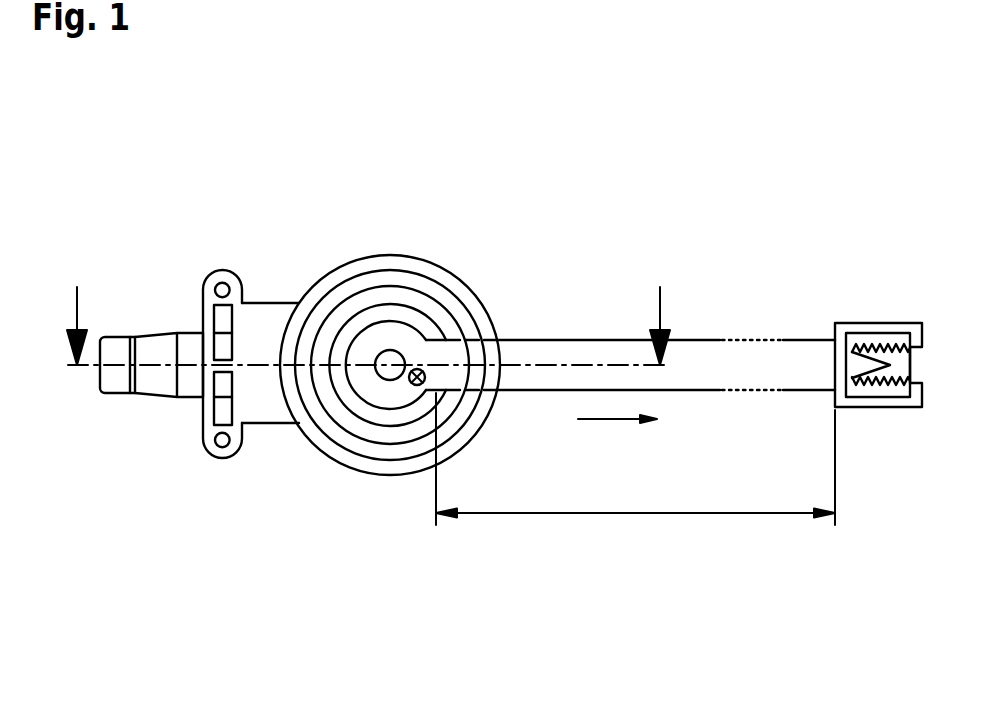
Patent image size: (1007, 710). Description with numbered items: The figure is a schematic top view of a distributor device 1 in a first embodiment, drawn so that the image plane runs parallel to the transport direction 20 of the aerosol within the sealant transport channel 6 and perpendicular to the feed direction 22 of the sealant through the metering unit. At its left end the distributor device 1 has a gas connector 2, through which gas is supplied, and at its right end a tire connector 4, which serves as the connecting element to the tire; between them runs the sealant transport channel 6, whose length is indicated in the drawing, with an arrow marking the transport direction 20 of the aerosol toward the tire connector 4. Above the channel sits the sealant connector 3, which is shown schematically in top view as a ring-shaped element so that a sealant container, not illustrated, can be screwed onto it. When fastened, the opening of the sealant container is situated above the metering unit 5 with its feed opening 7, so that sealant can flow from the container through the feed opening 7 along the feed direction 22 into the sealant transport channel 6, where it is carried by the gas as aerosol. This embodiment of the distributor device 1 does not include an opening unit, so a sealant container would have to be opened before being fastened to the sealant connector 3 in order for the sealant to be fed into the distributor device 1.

The distributor device 1 is at (146, 152).
The gas connector 2 is at (145, 347).
The sealant connector 3 is at (450, 283).
The tire connector 4 is at (887, 322).
The metering unit 5 is at (380, 335).
The sealant transport channel 6 is at (620, 516).
The feed opening 7 is at (375, 362).
The transport direction of the aerosol 20 is at (613, 422).
The feed direction of the sealant through the metering unit 22 is at (425, 377).